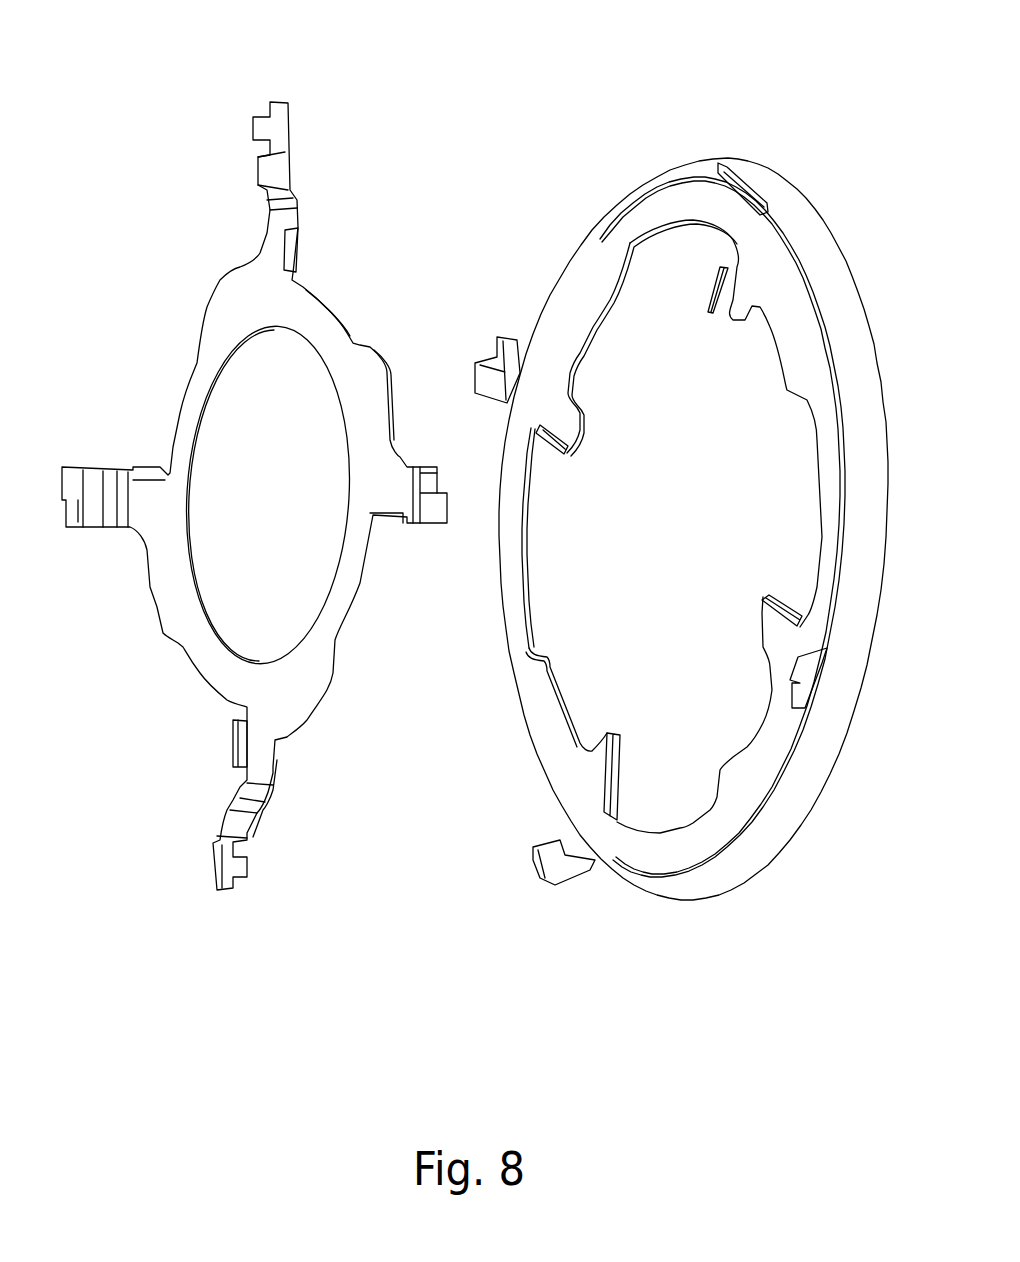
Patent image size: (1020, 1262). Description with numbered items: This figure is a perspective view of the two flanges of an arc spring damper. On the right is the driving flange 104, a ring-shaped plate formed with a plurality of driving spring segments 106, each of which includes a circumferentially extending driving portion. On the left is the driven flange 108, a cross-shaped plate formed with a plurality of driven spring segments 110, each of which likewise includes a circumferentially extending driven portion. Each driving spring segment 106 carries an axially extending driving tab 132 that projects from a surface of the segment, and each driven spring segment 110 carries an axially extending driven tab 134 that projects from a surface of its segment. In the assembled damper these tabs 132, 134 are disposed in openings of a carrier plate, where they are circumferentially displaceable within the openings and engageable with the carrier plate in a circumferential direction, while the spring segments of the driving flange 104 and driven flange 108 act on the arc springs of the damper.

The driving flange 104 is at (662, 498).
The driving spring segment 106 is at (550, 906).
The driven flange 108 is at (247, 514).
The driven spring segment 110 is at (218, 904).
The driving tab 132 is at (713, 280).
The driven tab 134 is at (232, 745).